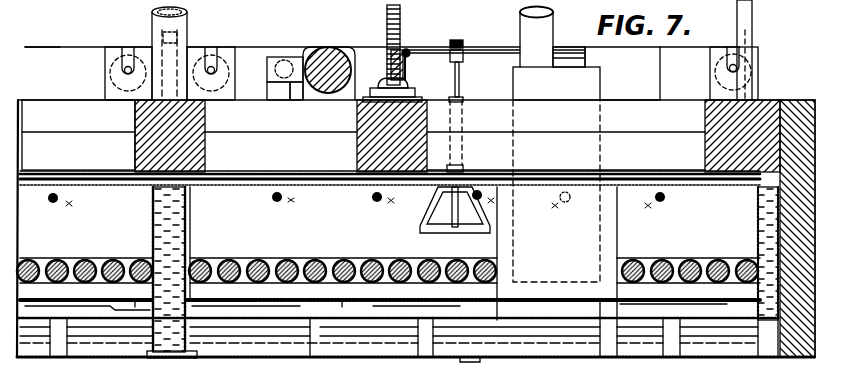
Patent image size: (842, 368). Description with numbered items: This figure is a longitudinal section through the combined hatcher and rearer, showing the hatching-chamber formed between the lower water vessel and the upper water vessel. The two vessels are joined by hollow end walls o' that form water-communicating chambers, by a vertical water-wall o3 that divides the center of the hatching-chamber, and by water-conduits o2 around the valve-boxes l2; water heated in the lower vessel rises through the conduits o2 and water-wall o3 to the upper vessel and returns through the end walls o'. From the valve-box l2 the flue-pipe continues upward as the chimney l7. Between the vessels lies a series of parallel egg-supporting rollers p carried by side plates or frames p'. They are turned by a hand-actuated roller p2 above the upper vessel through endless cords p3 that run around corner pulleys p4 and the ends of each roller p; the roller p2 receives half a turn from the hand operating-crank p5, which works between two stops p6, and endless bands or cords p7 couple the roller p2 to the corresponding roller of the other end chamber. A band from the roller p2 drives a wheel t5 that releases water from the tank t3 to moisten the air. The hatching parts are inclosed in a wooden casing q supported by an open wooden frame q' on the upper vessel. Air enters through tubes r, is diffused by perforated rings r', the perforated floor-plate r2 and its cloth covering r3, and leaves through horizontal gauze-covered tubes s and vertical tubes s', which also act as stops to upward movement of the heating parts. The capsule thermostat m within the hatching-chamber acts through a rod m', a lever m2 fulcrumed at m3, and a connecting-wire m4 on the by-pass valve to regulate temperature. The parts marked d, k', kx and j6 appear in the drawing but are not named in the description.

The endless bands or cords p7 is at (100, 47).
The hollow post d is at (152, 25).
The vertical tubes s' is at (478, 127).
The pulleys p4 is at (115, 73).
The hand operating-crank p5 is at (290, 62).
The hand-actuated roller p2 is at (340, 52).
The adjusting screw k' is at (381, 45).
The endless cords p3 is at (440, 47).
The chimney l7 is at (522, 27).
The wheel t5 is at (560, 47).
The fulcrum m3 is at (410, 52).
The lever m2 is at (470, 55).
The rod m' is at (477, 131).
The connecting-wire m4 is at (600, 60).
The water-containing tank t3 is at (630, 90).
The wooden casing q is at (559, 212).
The open wooden frame q' is at (401, 136).
The stops p6 is at (270, 96).
The bed plate kx is at (73, 182).
The horizontal tubes s is at (357, 213).
The water-wall o3 is at (188, 225).
The thermostat m is at (436, 210).
The rollers p is at (387, 255).
The plates or frames p' is at (390, 256).
The water-conduits o2 is at (556, 191).
The valve-box l2 is at (566, 155).
The hollow walls o' is at (678, 266).
The textile or cloth covering r3 is at (608, 328).
The air tubes r is at (389, 337).
The perforated rings r' is at (389, 333).
The perforated metal floor-plate r2 is at (133, 307).
The bottom lug j6 is at (470, 360).